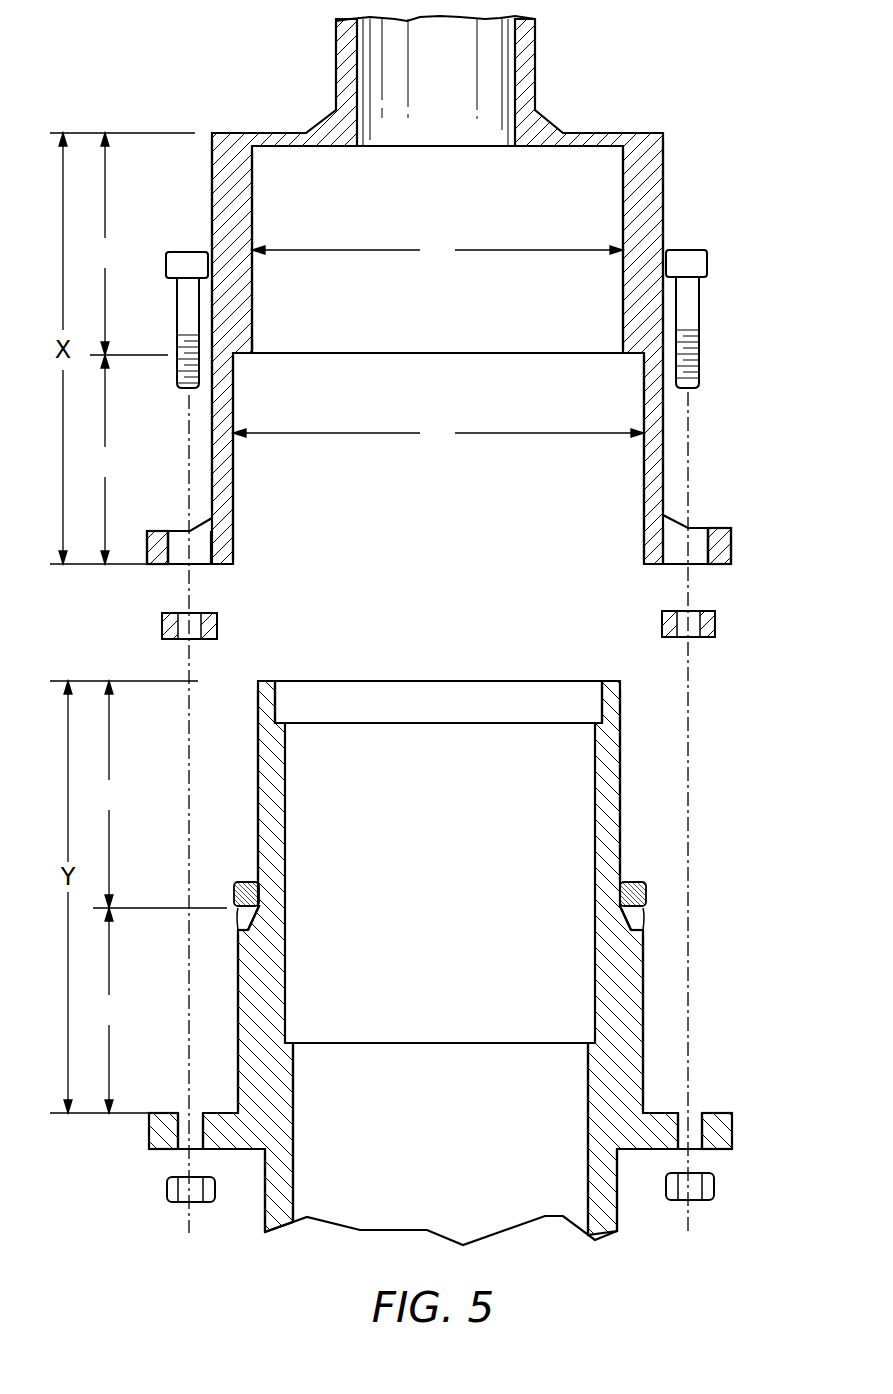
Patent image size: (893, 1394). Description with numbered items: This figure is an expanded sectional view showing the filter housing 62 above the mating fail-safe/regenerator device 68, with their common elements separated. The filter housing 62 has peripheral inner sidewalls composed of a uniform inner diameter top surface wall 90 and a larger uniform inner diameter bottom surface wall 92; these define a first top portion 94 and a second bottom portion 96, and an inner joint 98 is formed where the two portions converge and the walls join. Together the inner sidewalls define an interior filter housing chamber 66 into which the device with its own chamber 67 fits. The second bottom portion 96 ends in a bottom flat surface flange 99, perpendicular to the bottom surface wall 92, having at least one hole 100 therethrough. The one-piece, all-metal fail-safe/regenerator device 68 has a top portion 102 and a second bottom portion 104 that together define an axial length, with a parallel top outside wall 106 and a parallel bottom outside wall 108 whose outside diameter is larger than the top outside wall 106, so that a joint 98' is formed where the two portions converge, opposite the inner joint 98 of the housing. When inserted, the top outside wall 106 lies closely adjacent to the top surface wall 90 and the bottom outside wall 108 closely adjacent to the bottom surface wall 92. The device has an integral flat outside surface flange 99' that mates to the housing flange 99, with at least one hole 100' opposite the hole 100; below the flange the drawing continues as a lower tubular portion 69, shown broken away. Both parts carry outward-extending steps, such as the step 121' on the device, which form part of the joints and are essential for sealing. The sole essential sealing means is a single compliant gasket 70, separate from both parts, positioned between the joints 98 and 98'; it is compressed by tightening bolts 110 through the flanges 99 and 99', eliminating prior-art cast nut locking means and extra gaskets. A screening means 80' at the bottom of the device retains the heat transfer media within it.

The filter housing 62 is at (212, 180).
The interior filter housing chamber 66 is at (587, 192).
The top surface wall 90 is at (252, 176).
The bottom surface wall 92 is at (233, 483).
The first top portion 94 is at (122, 244).
The second bottom portion 96 is at (98, 459).
The inner joint 98 is at (389, 347).
The bottom flat surface flange 99 is at (417, 583).
The hole 100 is at (455, 520).
The bolts 110 is at (177, 292).
The chamber of the fail-safe/regenerator 67 is at (568, 765).
The fail-safe/regenerator device 68 is at (285, 790).
The tubular portion 69 is at (265, 1195).
The sealing means gasket 70 is at (250, 883).
The screening means 80' is at (440, 1062).
The joint 98' is at (439, 917).
The flat outside surface flange 99' is at (476, 1146).
The hole 100' is at (426, 1116).
The top portion 102 is at (138, 794).
The second bottom portion 104 is at (99, 1010).
The top outside wall 106 is at (620, 812).
The bottom outside wall 108 is at (643, 983).
The outward-extending step 121' is at (217, 954).